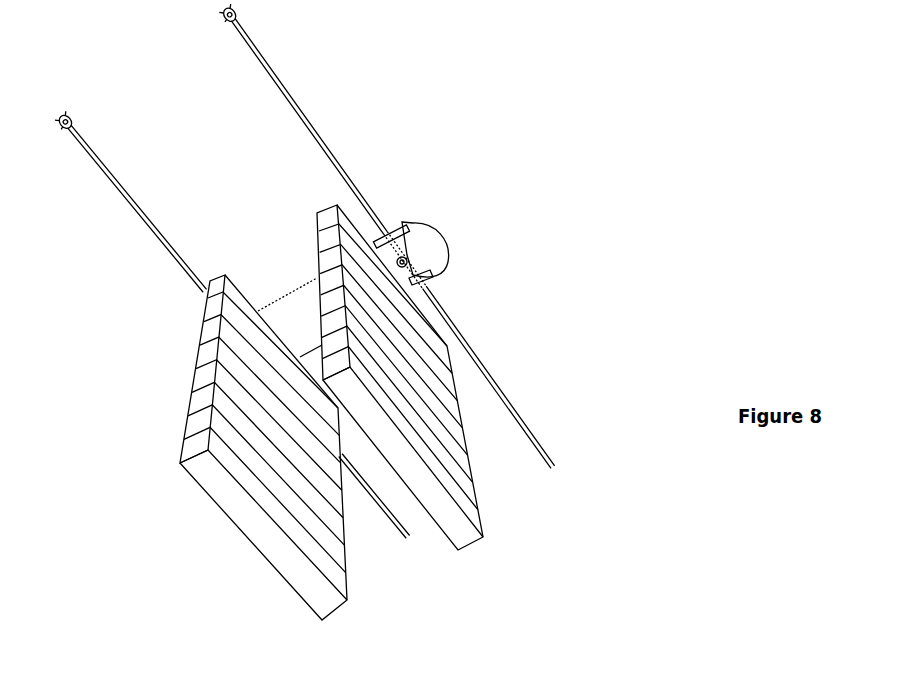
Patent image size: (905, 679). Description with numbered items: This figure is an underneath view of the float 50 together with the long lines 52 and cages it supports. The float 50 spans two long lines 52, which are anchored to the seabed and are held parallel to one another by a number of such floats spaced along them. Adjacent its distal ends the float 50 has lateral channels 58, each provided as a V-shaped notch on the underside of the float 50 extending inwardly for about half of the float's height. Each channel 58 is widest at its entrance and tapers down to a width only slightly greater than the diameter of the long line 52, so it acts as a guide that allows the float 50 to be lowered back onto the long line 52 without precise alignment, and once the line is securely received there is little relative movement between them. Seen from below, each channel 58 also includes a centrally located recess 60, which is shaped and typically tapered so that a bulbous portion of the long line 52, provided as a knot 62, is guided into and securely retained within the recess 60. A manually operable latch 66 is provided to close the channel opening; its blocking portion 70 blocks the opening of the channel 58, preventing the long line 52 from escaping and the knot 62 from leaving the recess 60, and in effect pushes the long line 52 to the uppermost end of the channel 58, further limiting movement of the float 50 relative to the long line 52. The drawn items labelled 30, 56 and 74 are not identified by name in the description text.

The fin stacks / heat sink fins 30 is at (457, 530).
The base plate 50 is at (289, 327).
The rods 52 is at (263, 68).
The lower clamp bracket 58 is at (430, 288).
The clamp body 60 is at (418, 242).
The screw 62 is at (413, 257).
The clamp pin 70 is at (403, 228).
The element 56 is at (552, 674).
The element 74 is at (674, 667).
The element 66 is at (788, 667).